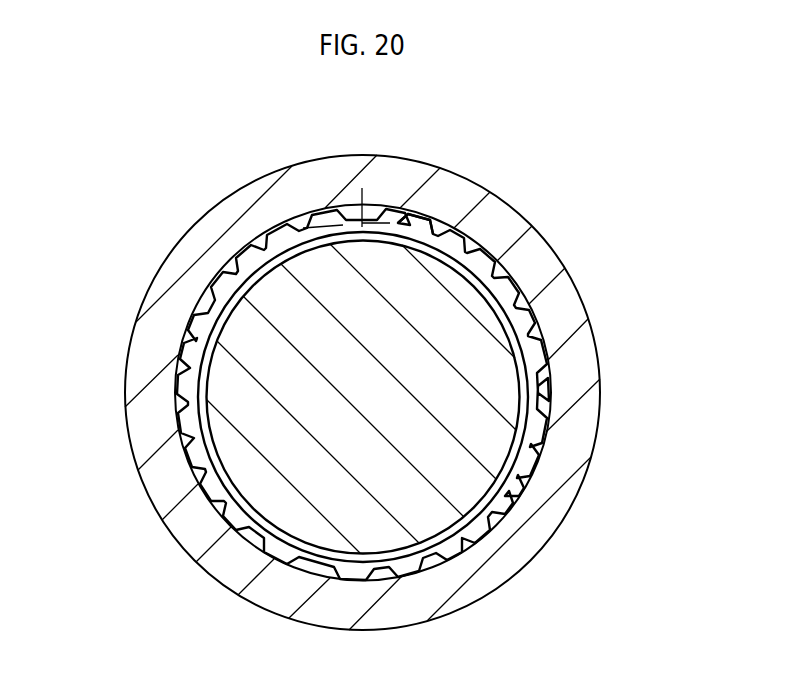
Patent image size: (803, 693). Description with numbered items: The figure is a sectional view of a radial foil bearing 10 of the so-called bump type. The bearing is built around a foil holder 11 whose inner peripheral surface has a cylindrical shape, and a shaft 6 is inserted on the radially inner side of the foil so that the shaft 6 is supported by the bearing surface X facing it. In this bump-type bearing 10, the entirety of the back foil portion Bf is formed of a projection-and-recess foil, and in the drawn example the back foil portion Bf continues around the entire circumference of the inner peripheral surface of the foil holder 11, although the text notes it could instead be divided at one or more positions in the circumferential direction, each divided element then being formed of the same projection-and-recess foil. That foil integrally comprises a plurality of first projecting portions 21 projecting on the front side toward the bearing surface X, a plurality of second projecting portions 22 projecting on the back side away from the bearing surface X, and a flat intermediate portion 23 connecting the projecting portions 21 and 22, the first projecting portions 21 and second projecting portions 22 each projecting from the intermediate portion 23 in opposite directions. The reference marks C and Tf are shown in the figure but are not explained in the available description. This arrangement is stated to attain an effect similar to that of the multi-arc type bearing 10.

The radial foil bearing 10 is at (606, 239).
The foil holder 11 is at (173, 279).
The shaft 6 is at (237, 450).
The first projecting portions 21 is at (440, 256).
The second projecting portions 22 is at (484, 240).
The intermediate portion 23 is at (428, 222).
The center axis mark C is at (254, 273).
The bearing surface X is at (216, 316).
The back foil portion Bf is at (530, 308).
The tightening force direction Tf is at (515, 323).